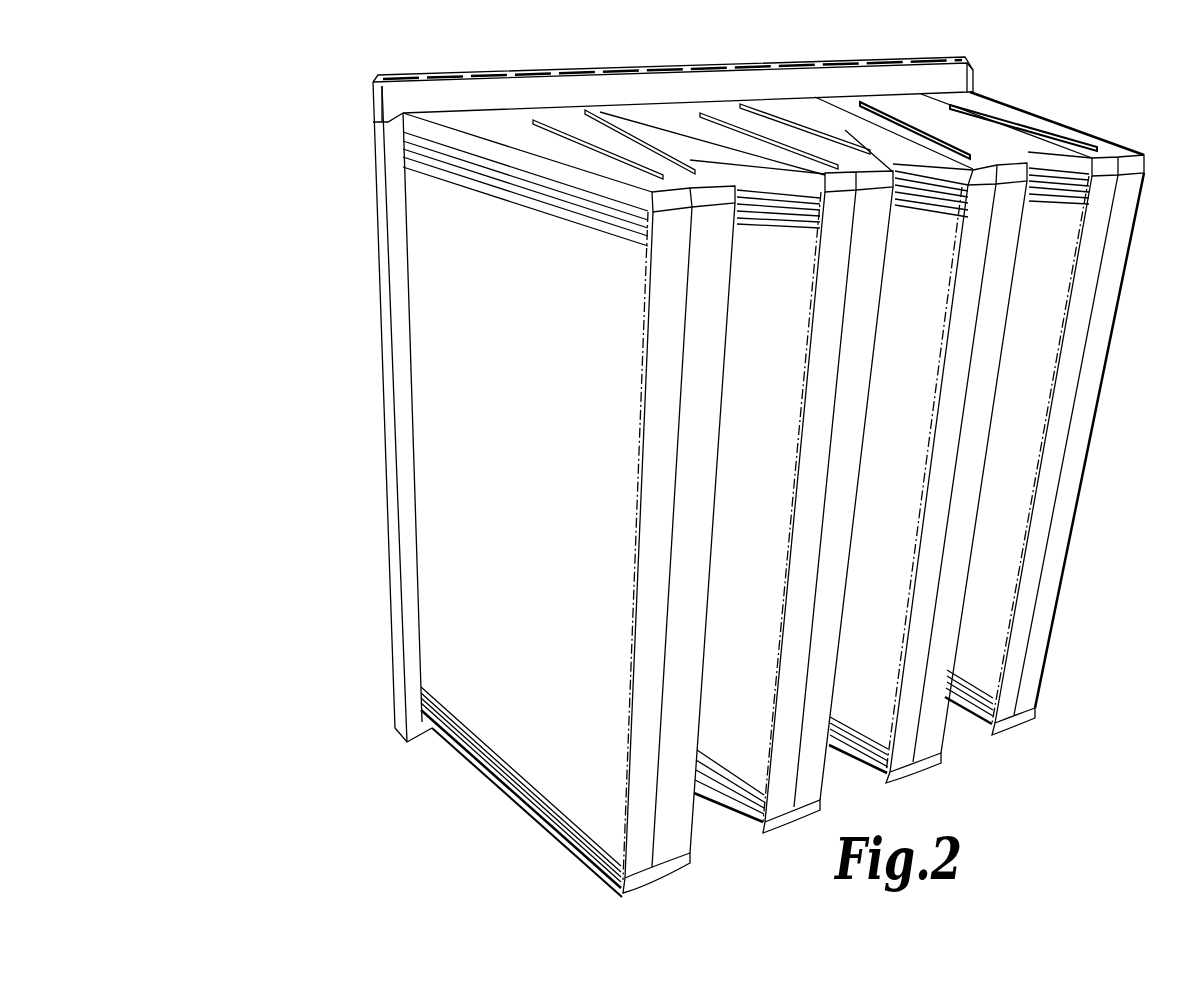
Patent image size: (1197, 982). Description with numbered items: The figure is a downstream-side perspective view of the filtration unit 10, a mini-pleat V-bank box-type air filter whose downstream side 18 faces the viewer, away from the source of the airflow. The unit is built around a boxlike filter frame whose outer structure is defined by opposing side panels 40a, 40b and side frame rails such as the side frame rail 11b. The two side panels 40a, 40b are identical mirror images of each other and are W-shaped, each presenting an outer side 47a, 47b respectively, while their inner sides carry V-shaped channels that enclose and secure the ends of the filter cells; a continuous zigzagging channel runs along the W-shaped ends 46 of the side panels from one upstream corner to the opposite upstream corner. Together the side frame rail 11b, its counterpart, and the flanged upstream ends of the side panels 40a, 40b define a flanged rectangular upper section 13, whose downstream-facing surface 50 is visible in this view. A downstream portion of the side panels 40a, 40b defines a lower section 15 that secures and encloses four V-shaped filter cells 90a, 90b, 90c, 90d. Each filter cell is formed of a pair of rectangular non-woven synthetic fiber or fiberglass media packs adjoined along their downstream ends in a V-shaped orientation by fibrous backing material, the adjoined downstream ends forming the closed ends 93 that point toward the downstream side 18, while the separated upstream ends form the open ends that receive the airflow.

The filtration unit 10 is at (669, 477).
The side frame rail 11b is at (395, 202).
The flanged rectangular upper section 13 is at (395, 745).
The lower section 15 is at (483, 834).
The downstream side 18 is at (1089, 560).
The side panel 40a is at (1042, 118).
The side panel 40b is at (593, 865).
The W-shaped ends 46 is at (697, 178).
The outer side 47a is at (938, 100).
The outer side 47b is at (498, 788).
The downstream-facing surface 50 is at (395, 102).
The V-shaped filter cell 90a is at (1033, 449).
The V-shaped filter cell 90b is at (918, 449).
The V-shaped filter cell 90c is at (783, 449).
The V-shaped filter cell 90d is at (558, 394).
The closed ends 93 is at (761, 833).